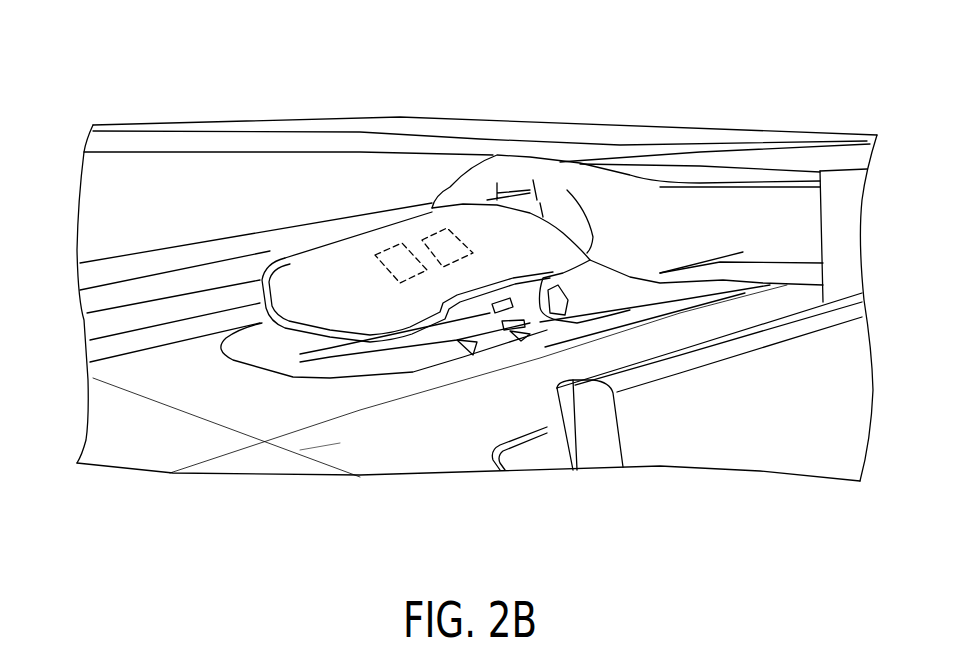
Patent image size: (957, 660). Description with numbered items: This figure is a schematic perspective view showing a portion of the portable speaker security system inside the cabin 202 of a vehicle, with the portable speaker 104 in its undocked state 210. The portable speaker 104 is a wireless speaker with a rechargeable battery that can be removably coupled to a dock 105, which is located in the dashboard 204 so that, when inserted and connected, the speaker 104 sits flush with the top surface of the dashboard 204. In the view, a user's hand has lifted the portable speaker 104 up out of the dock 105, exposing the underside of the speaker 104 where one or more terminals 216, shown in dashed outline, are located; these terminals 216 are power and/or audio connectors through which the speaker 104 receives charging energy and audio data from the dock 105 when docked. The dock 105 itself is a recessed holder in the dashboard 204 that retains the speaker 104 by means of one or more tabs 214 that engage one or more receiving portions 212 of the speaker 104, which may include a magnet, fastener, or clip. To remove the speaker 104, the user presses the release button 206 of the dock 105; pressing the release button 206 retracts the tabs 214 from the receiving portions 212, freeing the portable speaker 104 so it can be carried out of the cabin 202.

The cabin 202 is at (174, 97).
The portable speaker 104 is at (320, 265).
The terminals 216 is at (387, 250).
The undocked state 210 is at (615, 135).
The dock 105 is at (273, 362).
The dashboard 204 is at (340, 443).
The receiving portions 212 is at (490, 315).
The tabs 214 is at (503, 330).
The release button 206 is at (517, 340).